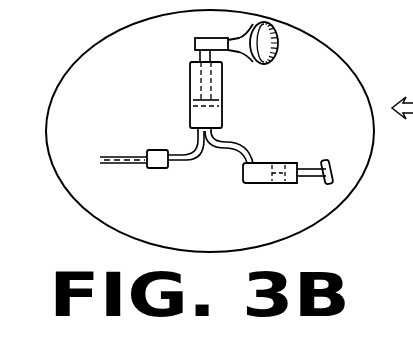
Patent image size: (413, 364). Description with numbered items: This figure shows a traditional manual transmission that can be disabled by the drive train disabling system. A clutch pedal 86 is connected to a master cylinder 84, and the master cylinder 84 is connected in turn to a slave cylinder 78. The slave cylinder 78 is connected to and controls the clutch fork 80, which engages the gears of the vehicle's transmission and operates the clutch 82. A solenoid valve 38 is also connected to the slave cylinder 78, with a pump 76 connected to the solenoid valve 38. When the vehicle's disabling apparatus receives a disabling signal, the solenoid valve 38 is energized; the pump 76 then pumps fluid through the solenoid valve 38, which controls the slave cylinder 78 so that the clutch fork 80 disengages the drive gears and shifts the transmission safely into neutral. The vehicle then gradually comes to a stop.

The solenoid valve 38 is at (158, 169).
The pump 76 is at (107, 159).
The slave cylinder 78 is at (190, 82).
The clutch fork 80 is at (224, 37).
The clutch 82 is at (262, 65).
The master cylinder 84 is at (268, 182).
The pedal 86 is at (327, 160).